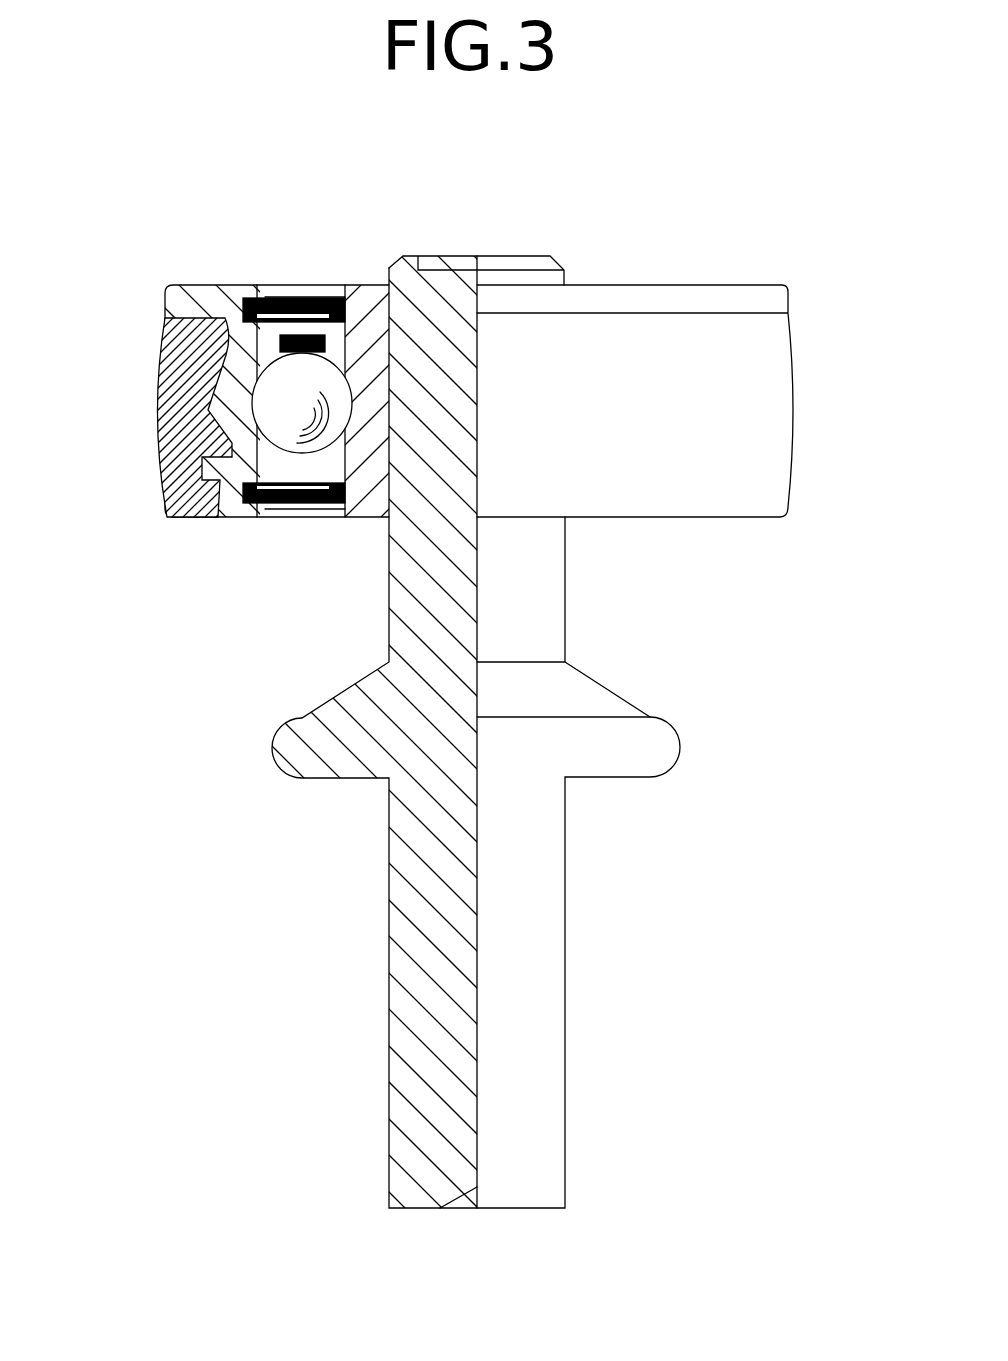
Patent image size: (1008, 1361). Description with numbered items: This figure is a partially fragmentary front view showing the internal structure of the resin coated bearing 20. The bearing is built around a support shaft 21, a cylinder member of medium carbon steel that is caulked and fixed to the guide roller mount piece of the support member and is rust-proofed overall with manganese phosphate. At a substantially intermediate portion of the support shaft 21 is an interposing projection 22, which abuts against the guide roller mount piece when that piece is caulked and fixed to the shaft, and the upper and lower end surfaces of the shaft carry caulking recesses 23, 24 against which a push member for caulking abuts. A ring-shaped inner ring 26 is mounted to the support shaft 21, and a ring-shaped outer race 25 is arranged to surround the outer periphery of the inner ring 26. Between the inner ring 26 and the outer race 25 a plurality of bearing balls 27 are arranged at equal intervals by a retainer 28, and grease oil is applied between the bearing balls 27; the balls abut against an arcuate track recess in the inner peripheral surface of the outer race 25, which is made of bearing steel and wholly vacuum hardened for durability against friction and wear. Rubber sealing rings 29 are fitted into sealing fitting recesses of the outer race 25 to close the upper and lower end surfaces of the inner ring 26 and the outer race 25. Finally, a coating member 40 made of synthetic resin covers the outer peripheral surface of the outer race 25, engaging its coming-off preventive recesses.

The resin coated bearing 20 is at (787, 392).
The support shaft 21 is at (547, 587).
The interposing projection 22 is at (668, 747).
The caulking recess 23 is at (448, 265).
The caulking recess 24 is at (467, 1200).
The outer race 25 is at (218, 290).
The inner ring 26 is at (365, 293).
The bearing balls 27 is at (273, 410).
The retainer 28 is at (283, 348).
The sealing ring 29 is at (307, 298).
The coating member 40 is at (158, 423).